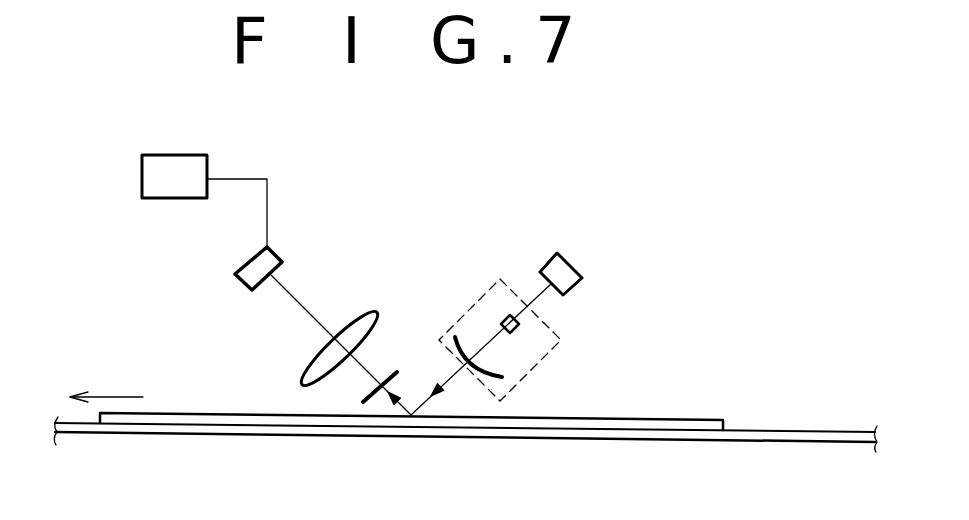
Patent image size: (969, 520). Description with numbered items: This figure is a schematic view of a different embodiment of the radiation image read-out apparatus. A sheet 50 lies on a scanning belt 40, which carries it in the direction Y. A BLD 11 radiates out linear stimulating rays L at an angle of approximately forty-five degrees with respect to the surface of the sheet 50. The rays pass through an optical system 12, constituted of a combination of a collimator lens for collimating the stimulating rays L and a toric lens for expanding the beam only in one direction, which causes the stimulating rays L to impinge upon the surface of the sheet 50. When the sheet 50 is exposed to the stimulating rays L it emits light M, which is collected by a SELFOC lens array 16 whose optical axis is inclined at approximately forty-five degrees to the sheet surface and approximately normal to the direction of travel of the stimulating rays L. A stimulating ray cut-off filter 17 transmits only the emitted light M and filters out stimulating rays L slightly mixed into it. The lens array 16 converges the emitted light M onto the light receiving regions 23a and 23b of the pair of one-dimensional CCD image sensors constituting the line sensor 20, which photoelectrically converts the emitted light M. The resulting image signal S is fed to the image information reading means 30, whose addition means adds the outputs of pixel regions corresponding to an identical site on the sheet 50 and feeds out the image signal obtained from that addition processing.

The BLD 11 is at (577, 270).
The optical system 12 is at (563, 337).
The SELFOC lens array 16 is at (352, 323).
The stimulating ray cut-off filter 17 is at (371, 403).
The line sensor 20 is at (297, 259).
The light receiving region 23a is at (346, 250).
The light receiving region 23b is at (283, 261).
The image information reading means 30 is at (174, 177).
The scanning belt 40 is at (73, 433).
The sheet 50 is at (695, 420).
The image signal S is at (245, 179).
The emitted light M is at (362, 373).
The linear stimulating rays L is at (448, 383).
The direction of travel Y is at (103, 397).